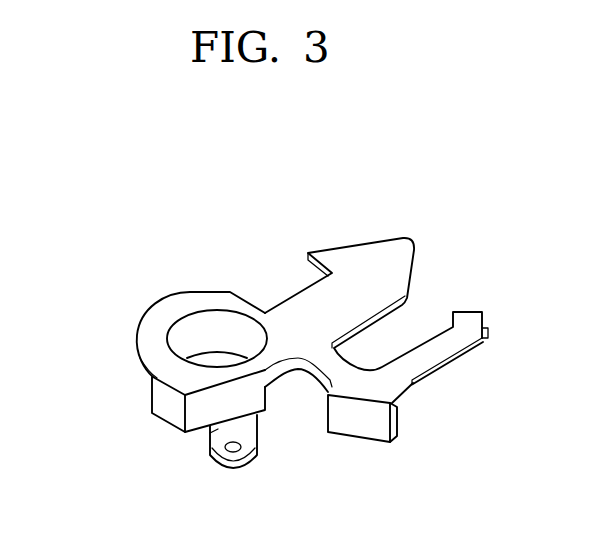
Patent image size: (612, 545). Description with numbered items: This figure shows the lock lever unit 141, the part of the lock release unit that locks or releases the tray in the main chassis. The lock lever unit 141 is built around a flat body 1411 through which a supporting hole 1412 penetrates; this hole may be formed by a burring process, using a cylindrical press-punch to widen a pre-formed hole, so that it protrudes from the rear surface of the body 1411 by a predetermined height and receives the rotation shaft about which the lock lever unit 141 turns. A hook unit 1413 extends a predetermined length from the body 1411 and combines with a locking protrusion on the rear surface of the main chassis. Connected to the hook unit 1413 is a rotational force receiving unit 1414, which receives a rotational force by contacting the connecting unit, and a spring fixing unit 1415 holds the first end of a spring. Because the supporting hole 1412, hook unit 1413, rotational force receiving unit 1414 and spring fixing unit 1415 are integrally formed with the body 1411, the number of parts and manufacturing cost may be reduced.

The lock lever unit 141 is at (138, 288).
The body 1411 is at (147, 343).
The supporting hole 1412 is at (213, 323).
The hook unit 1413 is at (357, 250).
The rotational force receiving unit 1414 is at (367, 430).
The spring fixing unit 1415 is at (225, 442).